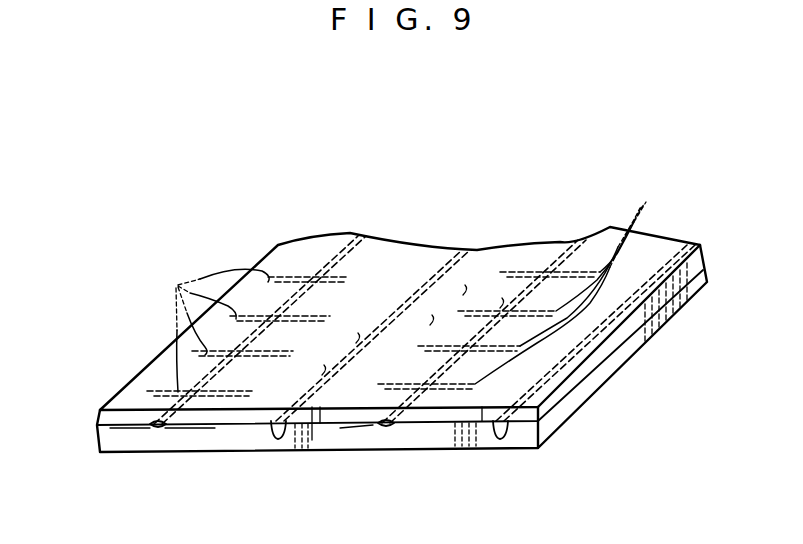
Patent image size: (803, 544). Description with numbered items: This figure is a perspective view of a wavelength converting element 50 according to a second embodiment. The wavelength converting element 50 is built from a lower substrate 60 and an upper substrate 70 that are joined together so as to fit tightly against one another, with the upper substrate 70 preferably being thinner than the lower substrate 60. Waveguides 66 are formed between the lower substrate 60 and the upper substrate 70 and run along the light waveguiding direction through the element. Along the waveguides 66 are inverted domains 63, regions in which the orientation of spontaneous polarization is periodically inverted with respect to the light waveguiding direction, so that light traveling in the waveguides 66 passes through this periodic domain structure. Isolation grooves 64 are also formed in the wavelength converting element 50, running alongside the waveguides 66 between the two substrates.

The wavelength converting element 50 is at (205, 214).
The lower substrate 60 is at (97, 440).
The inverted domains 63 is at (180, 284).
The isolation grooves 64 is at (278, 439).
The waveguides 66 is at (362, 236).
The upper substrate 70 is at (95, 412).